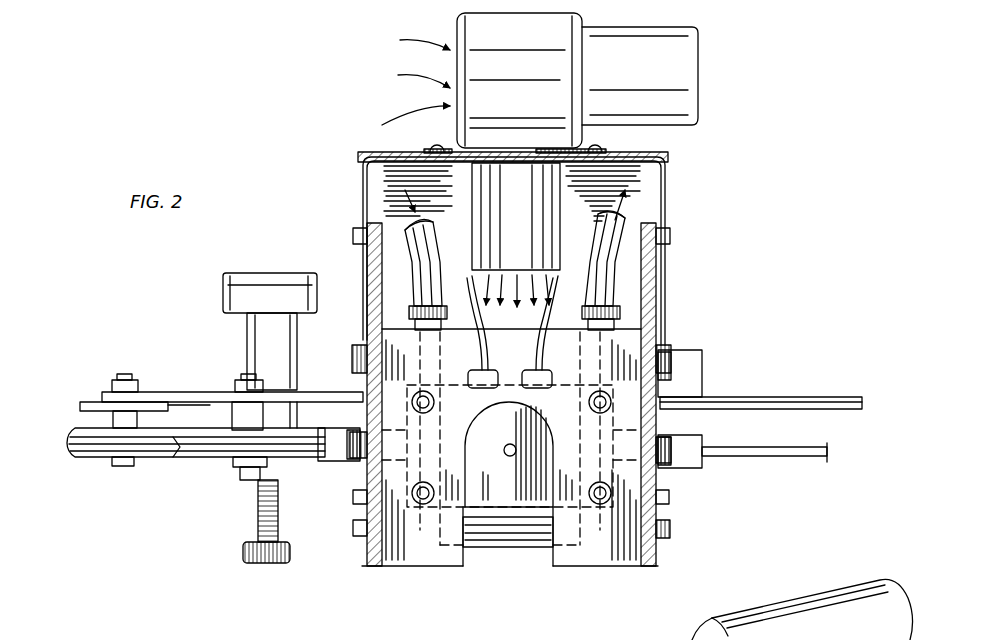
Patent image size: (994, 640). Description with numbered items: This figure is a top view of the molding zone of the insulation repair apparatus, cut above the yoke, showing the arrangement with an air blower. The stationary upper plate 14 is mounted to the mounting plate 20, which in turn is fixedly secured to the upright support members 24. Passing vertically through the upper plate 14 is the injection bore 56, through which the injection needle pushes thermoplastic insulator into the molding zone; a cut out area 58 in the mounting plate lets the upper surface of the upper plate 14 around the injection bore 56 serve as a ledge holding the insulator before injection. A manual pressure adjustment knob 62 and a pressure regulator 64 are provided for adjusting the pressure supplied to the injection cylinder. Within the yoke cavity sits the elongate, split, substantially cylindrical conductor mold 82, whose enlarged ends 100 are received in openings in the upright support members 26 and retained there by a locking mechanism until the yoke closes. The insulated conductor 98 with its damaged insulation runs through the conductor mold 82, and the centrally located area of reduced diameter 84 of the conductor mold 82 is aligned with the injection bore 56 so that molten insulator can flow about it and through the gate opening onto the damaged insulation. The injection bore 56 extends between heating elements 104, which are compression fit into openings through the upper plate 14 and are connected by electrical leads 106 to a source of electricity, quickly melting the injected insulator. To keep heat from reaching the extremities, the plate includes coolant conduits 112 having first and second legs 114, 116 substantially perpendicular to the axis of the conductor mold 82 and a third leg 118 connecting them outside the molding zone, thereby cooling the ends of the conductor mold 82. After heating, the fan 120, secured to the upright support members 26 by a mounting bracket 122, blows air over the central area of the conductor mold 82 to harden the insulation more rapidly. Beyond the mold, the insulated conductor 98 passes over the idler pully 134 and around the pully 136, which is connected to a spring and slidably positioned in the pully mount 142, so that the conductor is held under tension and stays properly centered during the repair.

The upper plate 14 is at (632, 575).
The mounting plate 20 is at (399, 567).
The upright support members 24 is at (547, 382).
The upright support members 26 is at (373, 276).
The injection bore 56 is at (508, 457).
The cut out area 58 is at (548, 558).
The manual pressure adjustment knob 62 is at (245, 553).
The pressure regulator 64 is at (260, 338).
The conductor mold 82 is at (672, 472).
The area of reduced diameter 84 is at (498, 629).
The insulated conductor 98 is at (187, 457).
The enlarged ends 100 is at (338, 463).
The heating elements 104 is at (658, 330).
The electrical leads 106 is at (543, 305).
The coolant conduits 112 is at (514, 550).
The first leg 114 is at (417, 267).
The second leg 116 is at (620, 235).
The third leg 118 is at (528, 545).
The fan 120 is at (480, 73).
The mounting bracket 122 is at (664, 160).
The idler pully 134 is at (226, 465).
The pully 136 is at (150, 460).
The pully mount 142 is at (92, 398).